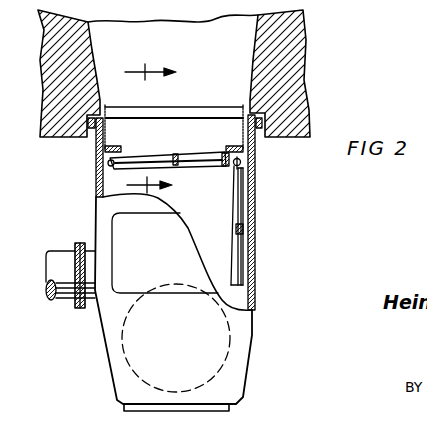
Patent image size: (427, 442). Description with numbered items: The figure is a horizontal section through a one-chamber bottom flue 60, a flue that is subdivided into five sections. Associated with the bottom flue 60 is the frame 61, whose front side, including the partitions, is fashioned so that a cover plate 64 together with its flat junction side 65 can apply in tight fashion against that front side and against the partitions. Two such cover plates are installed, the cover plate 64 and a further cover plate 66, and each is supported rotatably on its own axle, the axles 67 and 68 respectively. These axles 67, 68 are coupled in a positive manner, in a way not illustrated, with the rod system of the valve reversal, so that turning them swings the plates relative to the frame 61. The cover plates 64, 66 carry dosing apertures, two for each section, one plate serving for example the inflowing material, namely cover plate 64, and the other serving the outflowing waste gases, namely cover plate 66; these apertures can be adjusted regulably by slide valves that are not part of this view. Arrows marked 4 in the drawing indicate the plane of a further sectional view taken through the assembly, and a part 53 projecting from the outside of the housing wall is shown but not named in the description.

The one-chamber bottom flue 60 is at (225, 58).
The section line 4 is at (144, 130).
The frame 61 is at (107, 140).
The flat junction side 65 is at (174, 128).
The cover plate 64 is at (179, 171).
The axle 67 is at (98, 160).
The axle 68 is at (241, 162).
The cover plate 66 is at (244, 225).
The connecting fitting 53 is at (60, 301).